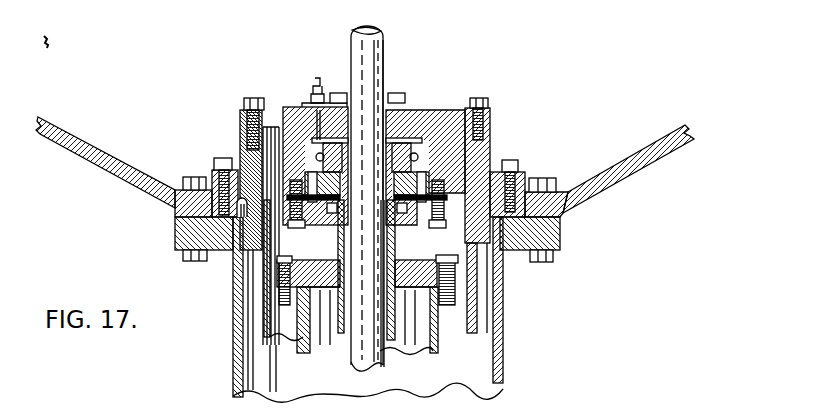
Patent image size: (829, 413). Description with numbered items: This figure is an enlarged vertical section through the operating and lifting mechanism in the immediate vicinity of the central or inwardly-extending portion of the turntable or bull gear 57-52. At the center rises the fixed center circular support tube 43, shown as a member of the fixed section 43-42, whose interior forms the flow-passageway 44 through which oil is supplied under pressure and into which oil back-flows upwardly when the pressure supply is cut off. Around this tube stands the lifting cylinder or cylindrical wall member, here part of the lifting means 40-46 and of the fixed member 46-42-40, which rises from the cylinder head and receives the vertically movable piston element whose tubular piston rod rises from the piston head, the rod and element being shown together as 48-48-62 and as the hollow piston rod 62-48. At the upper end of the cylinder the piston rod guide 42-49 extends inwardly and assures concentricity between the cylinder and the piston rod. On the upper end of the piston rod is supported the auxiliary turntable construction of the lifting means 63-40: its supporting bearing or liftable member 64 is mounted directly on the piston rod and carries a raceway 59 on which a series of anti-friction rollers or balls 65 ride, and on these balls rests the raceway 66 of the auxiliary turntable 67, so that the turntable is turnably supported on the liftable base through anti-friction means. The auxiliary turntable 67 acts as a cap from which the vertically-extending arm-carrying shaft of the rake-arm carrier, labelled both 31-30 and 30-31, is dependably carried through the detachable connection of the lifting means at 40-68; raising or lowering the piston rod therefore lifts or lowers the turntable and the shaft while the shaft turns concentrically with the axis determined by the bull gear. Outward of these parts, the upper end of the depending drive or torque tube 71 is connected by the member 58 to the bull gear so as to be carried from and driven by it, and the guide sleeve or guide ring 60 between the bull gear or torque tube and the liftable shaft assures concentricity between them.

The flow-passageway 44 is at (377, 42).
The center circular support tube of fixed member 43-42 is at (385, 72).
The auxiliary turntable 67 is at (579, 104).
The raceway 66 is at (578, 106).
The anti-friction rollers or balls 65 is at (578, 107).
The raceway 59 is at (578, 110).
The supporting bearing or liftable member 64 is at (589, 114).
The auxiliary turntable construction of lifting means 63-40 is at (545, 170).
The central portion of turntable or bull gear 57-52 is at (598, 190).
The member 58 is at (560, 236).
The tubular piston rod of piston element 62-48 is at (397, 247).
The arm-carrying shaft of rake-arm carrier 31-30 is at (475, 288).
The center circular support tube 43 is at (384, 316).
The lifting cylinder or cylindrical wall member 46-42-40 is at (437, 337).
The depending drive or torque tube 71 is at (503, 383).
The piston rod guide of fixed member 42-49 is at (300, 272).
The rake-arm carrier and arm-carrying shaft 30-31 is at (260, 318).
The lifting means and lifting cylinder 40-46 is at (340, 328).
The movable piston element with tubular piston rod 48-48-62 is at (340, 332).
The lifting means and detachable connection 40-68 is at (240, 148).
The guide sleeve or guide ring 60 is at (238, 170).